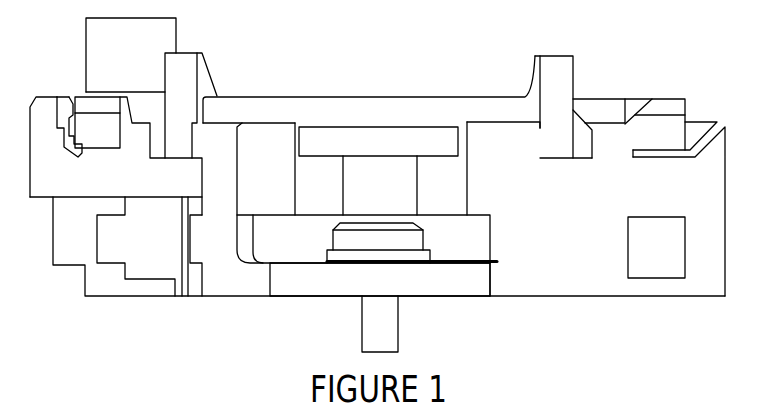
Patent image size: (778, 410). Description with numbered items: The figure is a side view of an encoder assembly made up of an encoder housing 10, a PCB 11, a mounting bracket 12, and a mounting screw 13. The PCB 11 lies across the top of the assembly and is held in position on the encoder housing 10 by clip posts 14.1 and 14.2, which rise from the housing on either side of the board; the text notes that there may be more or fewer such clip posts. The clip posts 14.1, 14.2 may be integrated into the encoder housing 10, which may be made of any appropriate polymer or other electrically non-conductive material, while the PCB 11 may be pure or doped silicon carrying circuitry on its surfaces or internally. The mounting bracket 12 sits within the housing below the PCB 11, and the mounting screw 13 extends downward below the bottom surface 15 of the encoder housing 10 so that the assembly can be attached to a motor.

The encoder housing 10 is at (128, 243).
The PCB 11 is at (367, 112).
The mounting bracket 12 is at (247, 265).
The mounting screw 13 is at (392, 325).
The clip post 14.1 is at (555, 73).
The clip post 14.2 is at (185, 78).
The bottom surface 15 is at (598, 297).